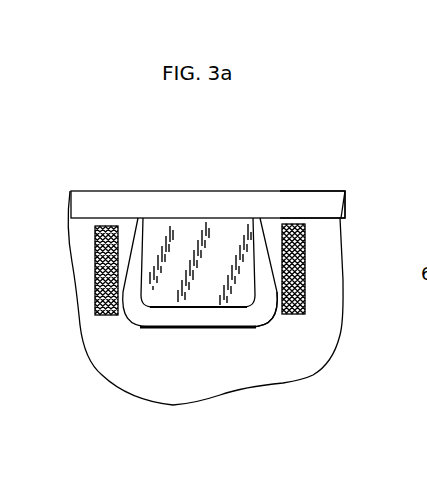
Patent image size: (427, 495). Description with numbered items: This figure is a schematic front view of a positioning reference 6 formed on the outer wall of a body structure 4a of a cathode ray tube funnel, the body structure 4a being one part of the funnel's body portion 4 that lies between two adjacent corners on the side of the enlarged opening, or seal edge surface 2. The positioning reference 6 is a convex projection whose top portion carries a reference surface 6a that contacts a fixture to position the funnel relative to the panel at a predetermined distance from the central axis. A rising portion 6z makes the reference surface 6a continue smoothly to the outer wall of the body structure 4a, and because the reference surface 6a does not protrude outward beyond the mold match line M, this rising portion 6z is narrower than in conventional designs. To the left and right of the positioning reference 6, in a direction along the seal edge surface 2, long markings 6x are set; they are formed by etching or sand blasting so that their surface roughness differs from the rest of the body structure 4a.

The enlarged opening (seal edge surface) 2 is at (116, 191).
The body portion 4 is at (206, 325).
The body structure 4a is at (198, 400).
The positioning reference 6 is at (182, 290).
The reference surface 6a is at (222, 237).
The markings 6x is at (95, 259).
The rising portion 6z is at (230, 317).
The mold match line M is at (313, 218).